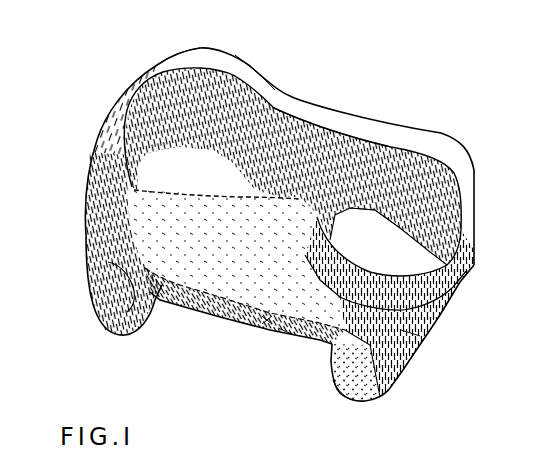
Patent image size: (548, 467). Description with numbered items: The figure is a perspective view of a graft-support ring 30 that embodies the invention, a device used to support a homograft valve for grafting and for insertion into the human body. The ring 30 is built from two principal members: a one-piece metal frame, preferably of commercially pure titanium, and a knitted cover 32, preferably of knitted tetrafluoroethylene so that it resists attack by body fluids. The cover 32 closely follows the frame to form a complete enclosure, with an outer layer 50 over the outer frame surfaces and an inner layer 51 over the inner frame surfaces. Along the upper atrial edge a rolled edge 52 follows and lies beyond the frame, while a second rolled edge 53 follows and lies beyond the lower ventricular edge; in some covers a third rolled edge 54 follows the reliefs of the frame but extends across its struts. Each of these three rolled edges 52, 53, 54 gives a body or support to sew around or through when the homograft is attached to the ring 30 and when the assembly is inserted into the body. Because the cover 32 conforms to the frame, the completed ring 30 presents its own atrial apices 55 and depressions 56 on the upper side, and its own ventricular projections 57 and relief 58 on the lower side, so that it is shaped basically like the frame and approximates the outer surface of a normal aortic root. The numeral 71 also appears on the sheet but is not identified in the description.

The graft-support ring 30 is at (279, 224).
The knitted cover 32 is at (420, 343).
The outer layer 50 is at (250, 280).
The inner layer 51 is at (340, 220).
The rolled edge 52 is at (283, 92).
The second rolled edge 53 is at (330, 386).
The third rolled edge 54 is at (270, 313).
The atrial apices 55 is at (165, 63).
The depressions 56 is at (140, 177).
The ventricular projections 57 is at (117, 336).
The relief 58 is at (285, 333).
The reference mark 71 is at (523, 463).